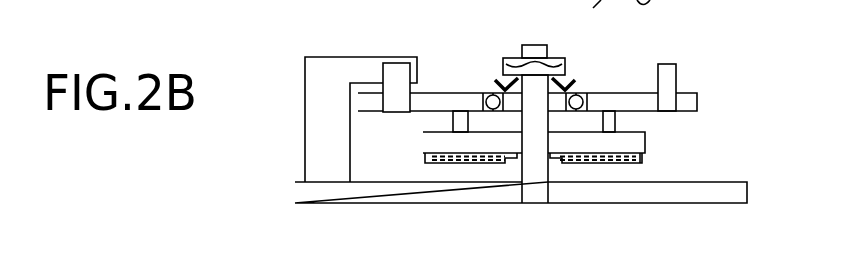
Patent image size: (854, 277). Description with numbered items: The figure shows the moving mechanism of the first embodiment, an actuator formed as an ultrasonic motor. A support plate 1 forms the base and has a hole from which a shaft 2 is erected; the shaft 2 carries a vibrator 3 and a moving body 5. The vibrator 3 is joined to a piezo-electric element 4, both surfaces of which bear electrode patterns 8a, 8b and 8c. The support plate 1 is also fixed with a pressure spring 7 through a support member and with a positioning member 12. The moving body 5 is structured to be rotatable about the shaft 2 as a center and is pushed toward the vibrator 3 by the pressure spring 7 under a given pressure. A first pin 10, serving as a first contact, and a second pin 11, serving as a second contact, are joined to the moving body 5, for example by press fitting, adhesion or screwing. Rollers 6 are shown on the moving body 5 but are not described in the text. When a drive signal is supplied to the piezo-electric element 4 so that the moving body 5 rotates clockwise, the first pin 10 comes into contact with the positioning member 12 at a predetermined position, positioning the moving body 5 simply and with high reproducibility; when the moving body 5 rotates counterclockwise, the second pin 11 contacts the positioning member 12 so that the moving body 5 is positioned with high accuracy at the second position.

The support plate 1 is at (575, 196).
The shaft 2 is at (532, 197).
The vibrator 3 is at (623, 143).
The piezo-electric element 4 is at (462, 164).
The moving body 5 is at (615, 100).
The roller 6 is at (485, 94).
The pressure spring 7 is at (568, 78).
The electrode pattern 8a is at (647, 140).
The electrode pattern 8b is at (618, 164).
The electrode pattern 8c is at (448, 164).
The first pin 10 is at (398, 72).
The second pin 11 is at (671, 63).
The positioning member 12 is at (325, 75).